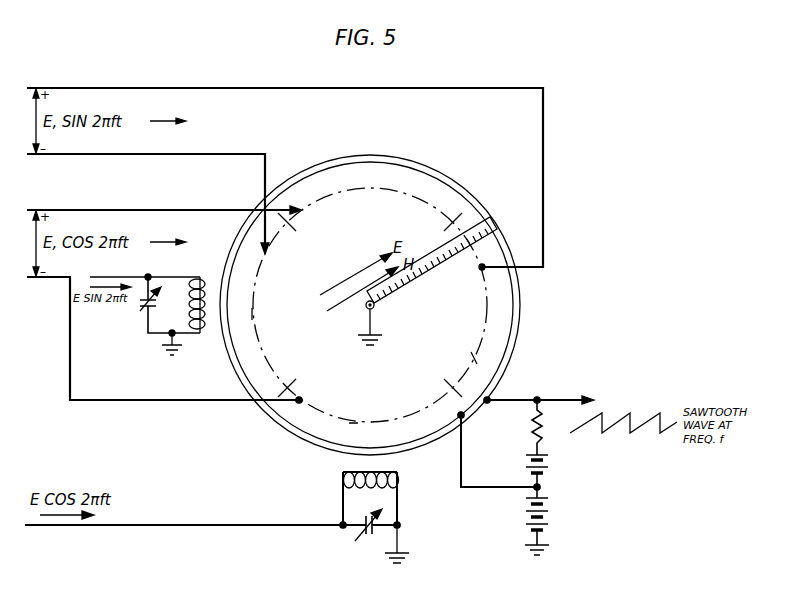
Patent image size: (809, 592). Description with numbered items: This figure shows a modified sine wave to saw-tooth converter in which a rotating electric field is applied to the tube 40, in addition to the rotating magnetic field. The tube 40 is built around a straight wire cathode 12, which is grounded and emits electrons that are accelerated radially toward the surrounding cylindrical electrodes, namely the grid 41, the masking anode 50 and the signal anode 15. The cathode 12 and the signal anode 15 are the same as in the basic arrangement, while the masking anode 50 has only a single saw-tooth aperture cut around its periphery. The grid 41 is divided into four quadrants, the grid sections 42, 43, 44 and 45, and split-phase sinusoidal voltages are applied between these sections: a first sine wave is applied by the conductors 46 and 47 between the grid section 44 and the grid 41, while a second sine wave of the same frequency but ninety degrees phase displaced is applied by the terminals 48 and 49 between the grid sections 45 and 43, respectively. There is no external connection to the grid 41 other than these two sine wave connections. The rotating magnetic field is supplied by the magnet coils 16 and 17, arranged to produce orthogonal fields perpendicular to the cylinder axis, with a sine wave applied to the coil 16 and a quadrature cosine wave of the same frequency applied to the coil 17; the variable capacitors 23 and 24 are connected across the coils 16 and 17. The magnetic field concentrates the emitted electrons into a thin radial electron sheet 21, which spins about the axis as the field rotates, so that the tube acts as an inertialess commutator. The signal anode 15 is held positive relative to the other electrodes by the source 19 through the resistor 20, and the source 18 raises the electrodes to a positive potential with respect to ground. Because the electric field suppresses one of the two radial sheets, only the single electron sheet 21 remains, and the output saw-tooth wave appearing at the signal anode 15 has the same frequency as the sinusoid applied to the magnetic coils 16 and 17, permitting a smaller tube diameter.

The conductor 46 is at (246, 88).
The conductor 47 is at (265, 178).
The terminal 48 is at (147, 210).
The terminal 49 is at (155, 400).
The tube 40 is at (420, 162).
The masking anode 50 is at (452, 184).
The signal anode 15 is at (486, 206).
The grid section 45 is at (359, 189).
The grid 41 is at (283, 243).
The grid section 42 is at (252, 314).
The grid section 43 is at (354, 423).
The grid section 44 is at (474, 358).
The radial electron sheet 21 is at (408, 290).
The cathode 12 is at (366, 310).
The variable capacitor 23 is at (139, 307).
The magnet coil 16 is at (203, 320).
The magnet coil 17 is at (343, 472).
The variable capacitor 24 is at (367, 538).
The resistor 20 is at (530, 425).
The source 19 is at (549, 464).
The source 18 is at (549, 516).